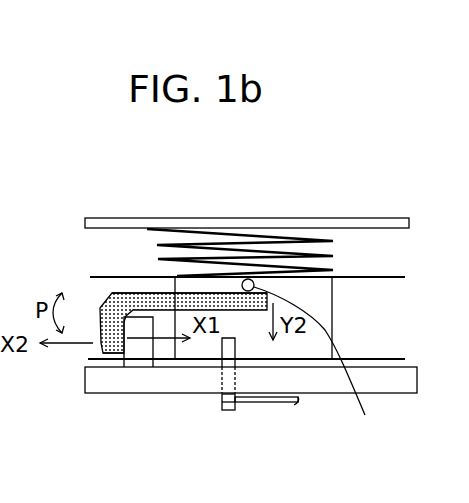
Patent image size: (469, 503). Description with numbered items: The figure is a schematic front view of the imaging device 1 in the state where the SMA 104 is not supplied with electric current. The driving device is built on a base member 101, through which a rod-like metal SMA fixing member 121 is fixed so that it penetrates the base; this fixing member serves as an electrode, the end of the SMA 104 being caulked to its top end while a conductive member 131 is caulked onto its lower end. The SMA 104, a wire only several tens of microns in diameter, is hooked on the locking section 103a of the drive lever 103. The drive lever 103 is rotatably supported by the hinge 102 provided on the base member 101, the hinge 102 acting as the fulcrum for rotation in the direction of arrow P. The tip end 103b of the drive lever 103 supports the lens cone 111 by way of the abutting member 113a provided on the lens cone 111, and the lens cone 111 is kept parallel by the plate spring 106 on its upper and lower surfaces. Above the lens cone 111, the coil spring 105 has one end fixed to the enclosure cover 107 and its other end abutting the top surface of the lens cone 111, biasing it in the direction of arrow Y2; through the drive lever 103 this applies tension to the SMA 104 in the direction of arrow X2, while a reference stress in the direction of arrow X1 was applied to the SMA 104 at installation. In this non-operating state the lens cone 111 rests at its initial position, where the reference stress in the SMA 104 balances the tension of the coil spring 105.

The imaging device 1 is at (7, 90).
The base member 101 is at (100, 383).
The hinge 102 is at (143, 353).
The drive lever 103 is at (100, 293).
The locking section 103a is at (100, 352).
The tip end 103b is at (223, 297).
The SMA 104 is at (193, 345).
The coil spring 105 is at (290, 238).
The plate spring 106 is at (353, 362).
The enclosure cover 107 is at (163, 217).
The lens cone 111 is at (298, 347).
The abutting member 113a is at (330, 360).
The SMA fixing member 121 is at (232, 412).
The conductive member 131 is at (287, 407).